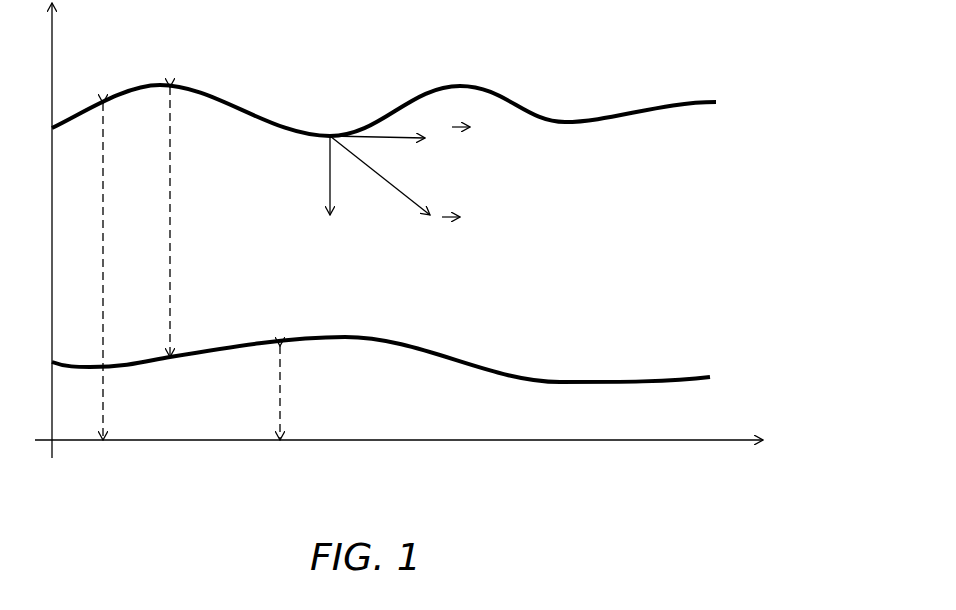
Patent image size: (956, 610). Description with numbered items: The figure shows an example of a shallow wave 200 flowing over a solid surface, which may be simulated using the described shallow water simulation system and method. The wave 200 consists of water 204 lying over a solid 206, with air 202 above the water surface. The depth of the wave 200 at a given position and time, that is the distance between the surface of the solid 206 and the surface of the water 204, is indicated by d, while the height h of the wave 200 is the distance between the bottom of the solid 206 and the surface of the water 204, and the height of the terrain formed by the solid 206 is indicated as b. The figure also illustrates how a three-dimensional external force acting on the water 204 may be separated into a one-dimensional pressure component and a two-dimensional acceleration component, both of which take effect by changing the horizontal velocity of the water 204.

The shallow wave 200 is at (424, 230).
The air 202 is at (384, 84).
The water 204 is at (479, 205).
The solid 206 is at (381, 387).